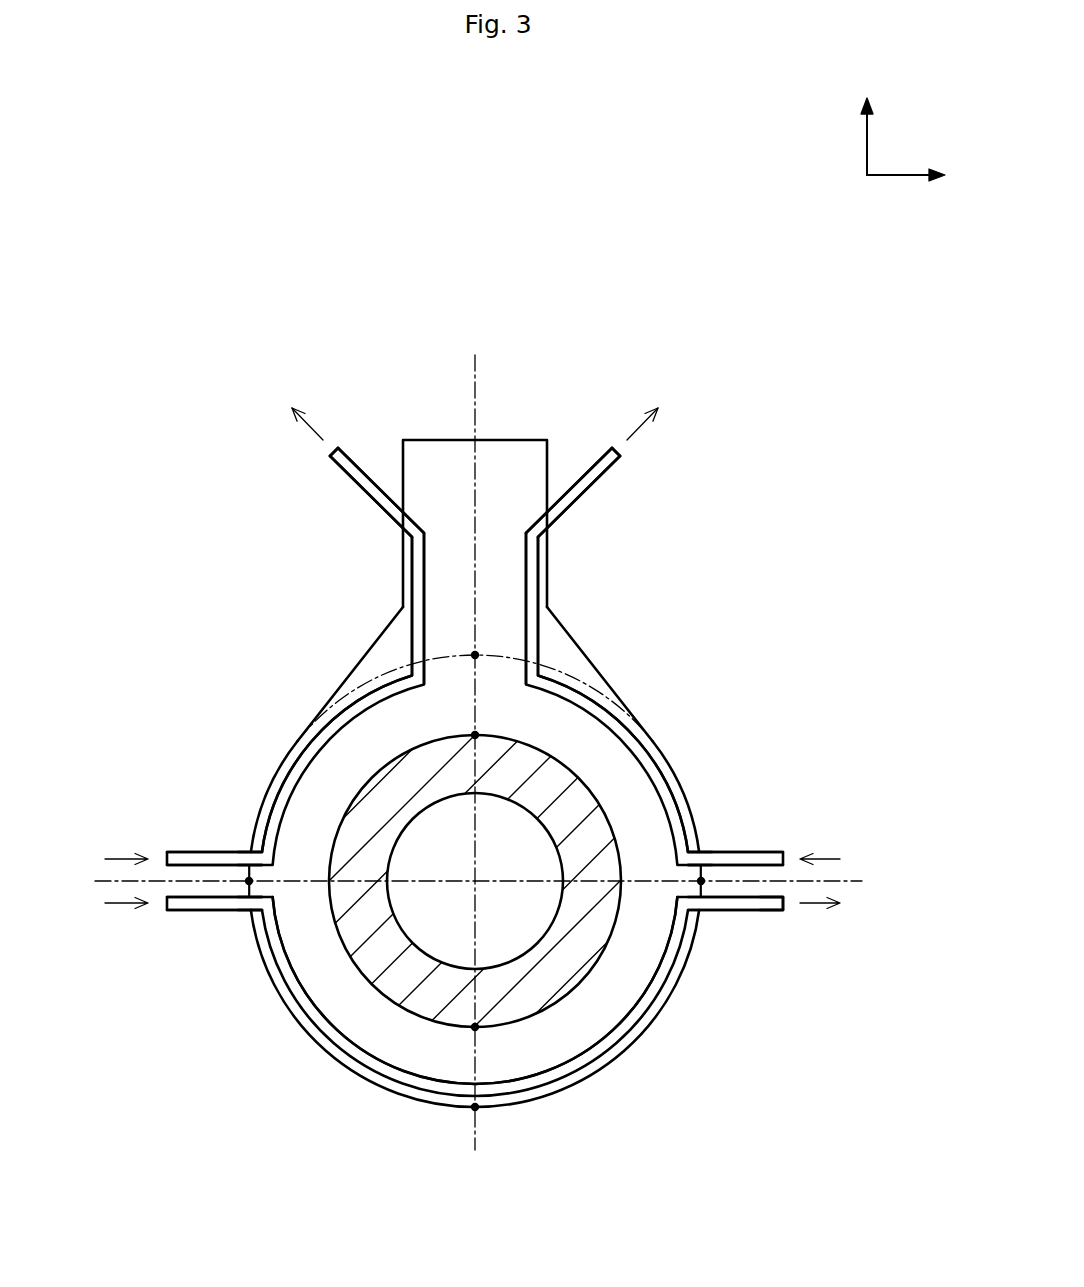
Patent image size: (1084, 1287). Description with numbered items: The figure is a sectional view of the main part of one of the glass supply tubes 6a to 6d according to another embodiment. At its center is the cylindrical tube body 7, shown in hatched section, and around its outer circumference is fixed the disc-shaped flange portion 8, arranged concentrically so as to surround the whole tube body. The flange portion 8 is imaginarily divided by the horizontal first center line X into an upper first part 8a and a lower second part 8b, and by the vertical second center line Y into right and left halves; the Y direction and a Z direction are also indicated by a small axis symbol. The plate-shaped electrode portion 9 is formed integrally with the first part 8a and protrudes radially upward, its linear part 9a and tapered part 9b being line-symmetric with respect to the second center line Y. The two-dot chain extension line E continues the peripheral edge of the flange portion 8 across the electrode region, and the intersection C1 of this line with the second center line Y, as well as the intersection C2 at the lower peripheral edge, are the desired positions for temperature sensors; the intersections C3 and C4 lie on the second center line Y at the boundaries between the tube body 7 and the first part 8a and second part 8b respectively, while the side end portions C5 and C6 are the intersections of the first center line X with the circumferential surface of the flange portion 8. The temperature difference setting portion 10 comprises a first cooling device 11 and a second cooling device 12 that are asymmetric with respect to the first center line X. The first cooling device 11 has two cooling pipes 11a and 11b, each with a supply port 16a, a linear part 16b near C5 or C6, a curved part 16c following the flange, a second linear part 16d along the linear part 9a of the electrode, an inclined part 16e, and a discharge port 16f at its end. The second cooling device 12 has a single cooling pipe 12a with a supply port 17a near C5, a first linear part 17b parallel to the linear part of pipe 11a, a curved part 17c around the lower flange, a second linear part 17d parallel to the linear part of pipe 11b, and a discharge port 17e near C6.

The glass supply tube 6a is at (703, 308).
The glass supply tube 6d is at (450, 741).
The tube body 7 is at (543, 787).
The flange portion 8 is at (688, 968).
The first part 8a is at (672, 773).
The second part 8b is at (640, 1030).
The electrode portion 9 is at (500, 415).
The linear part 9a is at (527, 450).
The tapered part 9b is at (563, 640).
The temperature difference setting portion 10 is at (93, 1008).
The first cooling device 11 is at (210, 838).
The cooling pipe 11a is at (338, 487).
The cooling pipe 11b is at (612, 487).
The second cooling device 12 is at (210, 923).
The cooling pipe 12a is at (318, 1045).
The supply port 16a is at (167, 853).
The linear part 16b is at (238, 860).
The curved part 16c is at (337, 722).
The second linear part 16d is at (416, 583).
The inclined part 16e is at (383, 505).
The discharge port 16f is at (322, 450).
The supply port 17a is at (167, 911).
The first linear part 17b is at (238, 913).
The curved part 17c is at (386, 1073).
The second linear part 17d is at (738, 912).
The discharge port 17e is at (792, 908).
The intersection C1 is at (475, 655).
The intersection C2 is at (475, 1107).
The intersection C3 is at (476, 735).
The intersection C4 is at (476, 1027).
The side end portion of the flange portion C5 is at (250, 881).
The side end portion of the flange portion C6 is at (700, 881).
The extension line E is at (585, 682).
The first center line X is at (862, 876).
The second center line Y is at (708, 656).
The Z axis Z is at (866, 122).